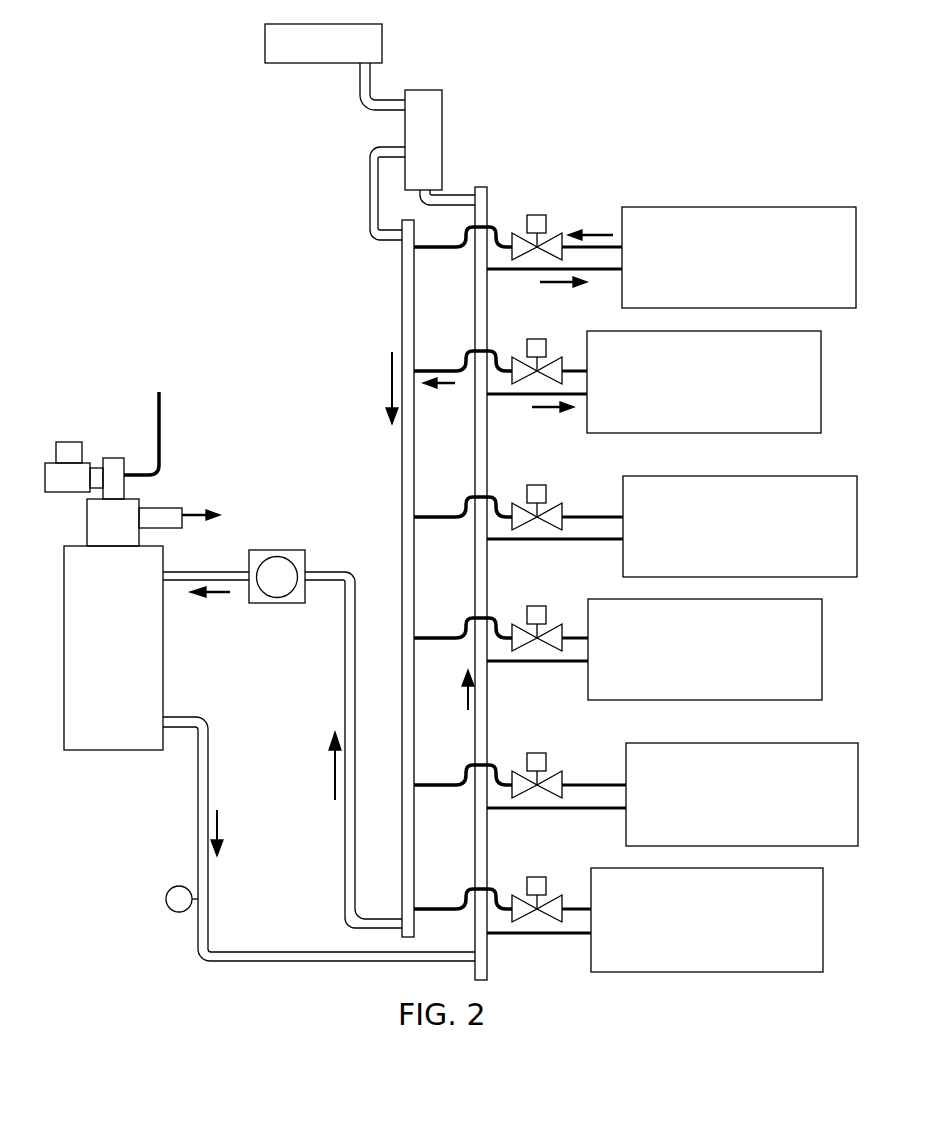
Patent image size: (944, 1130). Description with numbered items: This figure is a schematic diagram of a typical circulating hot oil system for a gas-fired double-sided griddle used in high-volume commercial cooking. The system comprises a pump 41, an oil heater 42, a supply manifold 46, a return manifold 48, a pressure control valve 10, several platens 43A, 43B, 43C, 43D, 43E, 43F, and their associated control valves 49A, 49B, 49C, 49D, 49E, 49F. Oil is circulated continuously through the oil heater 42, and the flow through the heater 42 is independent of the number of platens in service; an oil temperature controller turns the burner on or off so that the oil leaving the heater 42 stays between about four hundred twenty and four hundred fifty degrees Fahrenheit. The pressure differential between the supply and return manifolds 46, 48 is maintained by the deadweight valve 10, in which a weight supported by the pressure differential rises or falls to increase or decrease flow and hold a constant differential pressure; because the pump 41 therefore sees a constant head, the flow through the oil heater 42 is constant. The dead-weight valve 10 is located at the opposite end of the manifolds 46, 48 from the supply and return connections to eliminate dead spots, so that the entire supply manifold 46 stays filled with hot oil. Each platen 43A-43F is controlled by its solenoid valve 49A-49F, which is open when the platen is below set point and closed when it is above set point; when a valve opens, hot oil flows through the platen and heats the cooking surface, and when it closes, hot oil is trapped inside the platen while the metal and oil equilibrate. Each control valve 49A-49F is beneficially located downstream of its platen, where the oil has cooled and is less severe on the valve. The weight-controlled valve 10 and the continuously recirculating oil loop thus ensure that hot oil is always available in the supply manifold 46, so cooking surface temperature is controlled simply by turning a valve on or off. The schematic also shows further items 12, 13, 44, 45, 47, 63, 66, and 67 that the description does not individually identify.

The pressure control valve 10 is at (409, 151).
The conduit to supply manifold 12 is at (440, 196).
The conduit to return manifold 13 is at (372, 154).
The pump 41 is at (264, 588).
The oil heater 42 is at (99, 608).
The platen 43A is at (812, 279).
The platen 43B is at (777, 404).
The platen 43C is at (796, 549).
The platen 43D is at (759, 673).
The platen 43E is at (804, 817).
The platen 43F is at (768, 942).
The controller 44 is at (309, 56).
The return line to heater 45 is at (249, 570).
The supply manifold 46 is at (482, 927).
The supply line from pump 47 is at (310, 574).
The return manifold 48 is at (414, 833).
The control valve 49A is at (538, 215).
The control valve 49B is at (555, 331).
The control valve 49C is at (546, 486).
The control valve 49D is at (557, 600).
The control valve 49E is at (560, 748).
The control valve 49F is at (558, 872).
The vent outlet 63 is at (192, 511).
The expansion tank assembly 66 is at (84, 468).
The fill line 67 is at (162, 469).